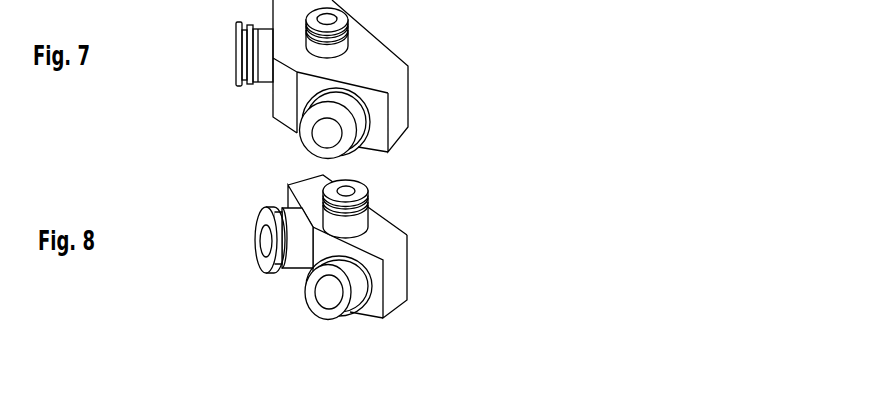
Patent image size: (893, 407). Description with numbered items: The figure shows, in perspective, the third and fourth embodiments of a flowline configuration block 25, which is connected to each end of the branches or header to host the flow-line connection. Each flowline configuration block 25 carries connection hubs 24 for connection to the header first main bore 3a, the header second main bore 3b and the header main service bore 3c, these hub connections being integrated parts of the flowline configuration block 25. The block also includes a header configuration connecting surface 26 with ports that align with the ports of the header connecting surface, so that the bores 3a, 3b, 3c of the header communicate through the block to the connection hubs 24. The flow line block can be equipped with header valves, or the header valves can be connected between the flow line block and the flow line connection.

In FIG. 7, the connection hub 24 is at (338, 18).
In FIG. 8, the flowline configuration block 25 is at (368, 236).
In FIG. 8, the header configuration connecting surface 26 is at (372, 213).
In FIG. 8, the header first main bore 3a is at (328, 288).
In FIG. 8, the header second main bore 3b is at (263, 240).
In FIG. 8, the header main service bore 3c is at (343, 190).